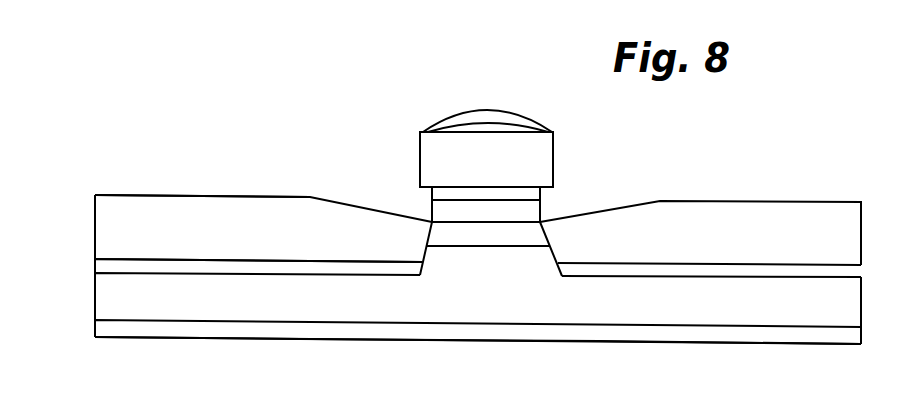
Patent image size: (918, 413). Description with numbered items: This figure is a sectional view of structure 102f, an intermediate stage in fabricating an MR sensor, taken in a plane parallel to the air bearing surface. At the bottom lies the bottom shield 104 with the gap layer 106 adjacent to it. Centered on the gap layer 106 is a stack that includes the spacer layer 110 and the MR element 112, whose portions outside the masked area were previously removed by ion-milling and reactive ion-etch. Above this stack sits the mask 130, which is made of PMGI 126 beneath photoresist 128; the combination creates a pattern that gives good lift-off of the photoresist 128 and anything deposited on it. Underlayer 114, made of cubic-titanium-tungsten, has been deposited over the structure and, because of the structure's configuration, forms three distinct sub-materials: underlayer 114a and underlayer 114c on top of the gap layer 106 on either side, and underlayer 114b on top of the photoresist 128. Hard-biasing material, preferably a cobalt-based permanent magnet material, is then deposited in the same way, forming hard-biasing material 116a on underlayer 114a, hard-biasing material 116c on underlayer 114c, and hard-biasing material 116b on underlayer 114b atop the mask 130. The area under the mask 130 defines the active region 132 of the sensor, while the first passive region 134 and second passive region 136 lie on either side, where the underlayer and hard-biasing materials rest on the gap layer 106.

The structure 102f is at (190, 184).
The bottom shield 104 is at (738, 333).
The gap layer 106 is at (512, 311).
The spacer layer 110 is at (523, 235).
The MR element 112 is at (440, 210).
The underlayer 114 is at (90, 263).
The first passive region of underlayer 114a is at (234, 233).
The underlayer material on mask 114b is at (507, 125).
The second passive region of underlayer 114c is at (747, 228).
The first passive region of hard-biasing material 116a is at (262, 268).
The hard-biasing material on mask 116b is at (480, 110).
The second passive region of hard-biasing material 116c is at (657, 268).
The PMGI 126 is at (515, 192).
The photoresist 128 is at (556, 137).
The mask 130 is at (578, 124).
The active region 132 is at (474, 346).
The first passive region 134 is at (157, 346).
The second passive region 136 is at (677, 350).